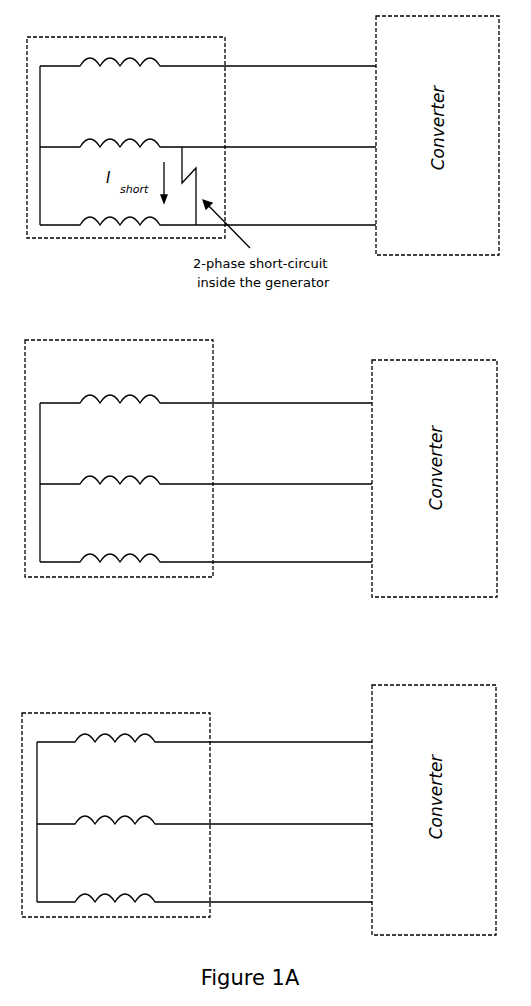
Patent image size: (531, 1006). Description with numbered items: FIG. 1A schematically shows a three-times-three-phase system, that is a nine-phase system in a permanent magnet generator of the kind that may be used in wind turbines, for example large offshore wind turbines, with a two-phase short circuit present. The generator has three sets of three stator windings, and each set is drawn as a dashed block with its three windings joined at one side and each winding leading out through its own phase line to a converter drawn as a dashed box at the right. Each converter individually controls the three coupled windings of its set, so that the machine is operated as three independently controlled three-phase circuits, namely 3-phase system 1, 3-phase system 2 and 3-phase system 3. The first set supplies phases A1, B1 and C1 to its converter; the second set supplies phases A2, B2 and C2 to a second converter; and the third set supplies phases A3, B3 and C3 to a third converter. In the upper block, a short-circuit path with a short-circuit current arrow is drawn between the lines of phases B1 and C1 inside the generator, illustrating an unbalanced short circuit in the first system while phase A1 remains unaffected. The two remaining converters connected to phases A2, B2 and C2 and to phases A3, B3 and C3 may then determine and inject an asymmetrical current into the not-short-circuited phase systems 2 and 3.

The 3-phase system 1 is at (126, 150).
The 3-phase system 2 is at (119, 470).
The 3-phase system 3 is at (116, 827).
The phase A1 is at (208, 56).
The phase B1 is at (208, 137).
The phase C1 is at (208, 215).
The phase A2 is at (206, 393).
The phase B2 is at (206, 474).
The phase C2 is at (206, 552).
The phase A3 is at (204, 732).
The phase B3 is at (204, 814).
The phase C3 is at (204, 892).